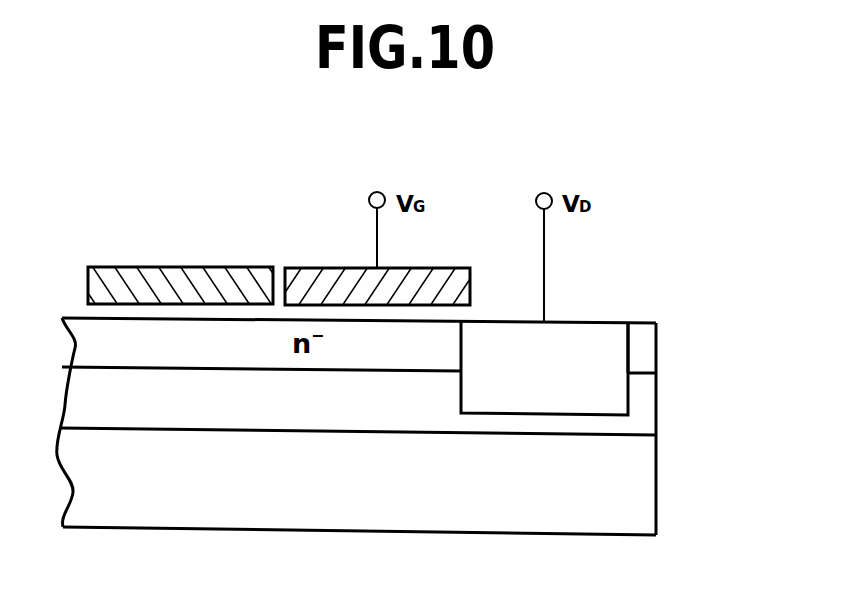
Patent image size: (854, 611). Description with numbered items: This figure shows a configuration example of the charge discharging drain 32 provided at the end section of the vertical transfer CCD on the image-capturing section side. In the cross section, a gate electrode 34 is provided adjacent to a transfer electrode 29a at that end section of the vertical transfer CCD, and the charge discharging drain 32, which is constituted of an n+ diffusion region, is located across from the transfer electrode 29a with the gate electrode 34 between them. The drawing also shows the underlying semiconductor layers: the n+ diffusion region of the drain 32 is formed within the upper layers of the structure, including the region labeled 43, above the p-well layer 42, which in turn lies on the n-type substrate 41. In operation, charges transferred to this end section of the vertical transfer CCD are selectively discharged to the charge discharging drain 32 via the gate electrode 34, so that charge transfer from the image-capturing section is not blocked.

The transfer electrode 29a is at (196, 267).
The gate electrode 34 is at (452, 268).
The charge discharging drain 32 is at (586, 337).
The n- region 43 is at (642, 342).
The p-well 42 is at (643, 413).
The n-type substrate 41 is at (643, 505).